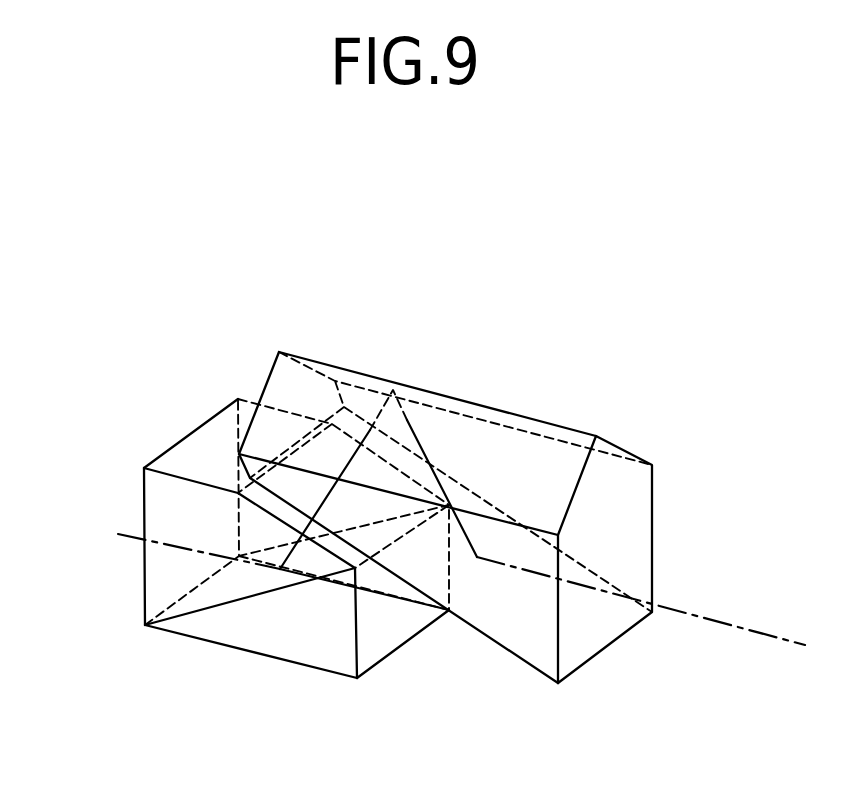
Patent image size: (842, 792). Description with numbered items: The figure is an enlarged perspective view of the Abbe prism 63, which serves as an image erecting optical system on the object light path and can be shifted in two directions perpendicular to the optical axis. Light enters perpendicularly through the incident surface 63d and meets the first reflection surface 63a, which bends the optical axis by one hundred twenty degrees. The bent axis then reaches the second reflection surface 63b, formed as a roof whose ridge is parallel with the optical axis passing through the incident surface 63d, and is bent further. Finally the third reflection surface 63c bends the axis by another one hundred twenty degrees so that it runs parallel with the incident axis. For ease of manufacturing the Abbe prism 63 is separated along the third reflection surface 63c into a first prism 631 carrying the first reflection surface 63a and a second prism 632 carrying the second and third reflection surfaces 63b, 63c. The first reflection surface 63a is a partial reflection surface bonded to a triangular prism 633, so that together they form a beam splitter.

The Abbe prism 63 is at (405, 503).
The first prism 631 is at (178, 442).
The second prism 632 is at (366, 375).
The triangular prism 633 is at (268, 657).
The first reflection surface 63a is at (213, 598).
The second reflection surface 63b is at (558, 424).
The third reflection surface 63c is at (480, 636).
The incident surface 63d is at (143, 552).